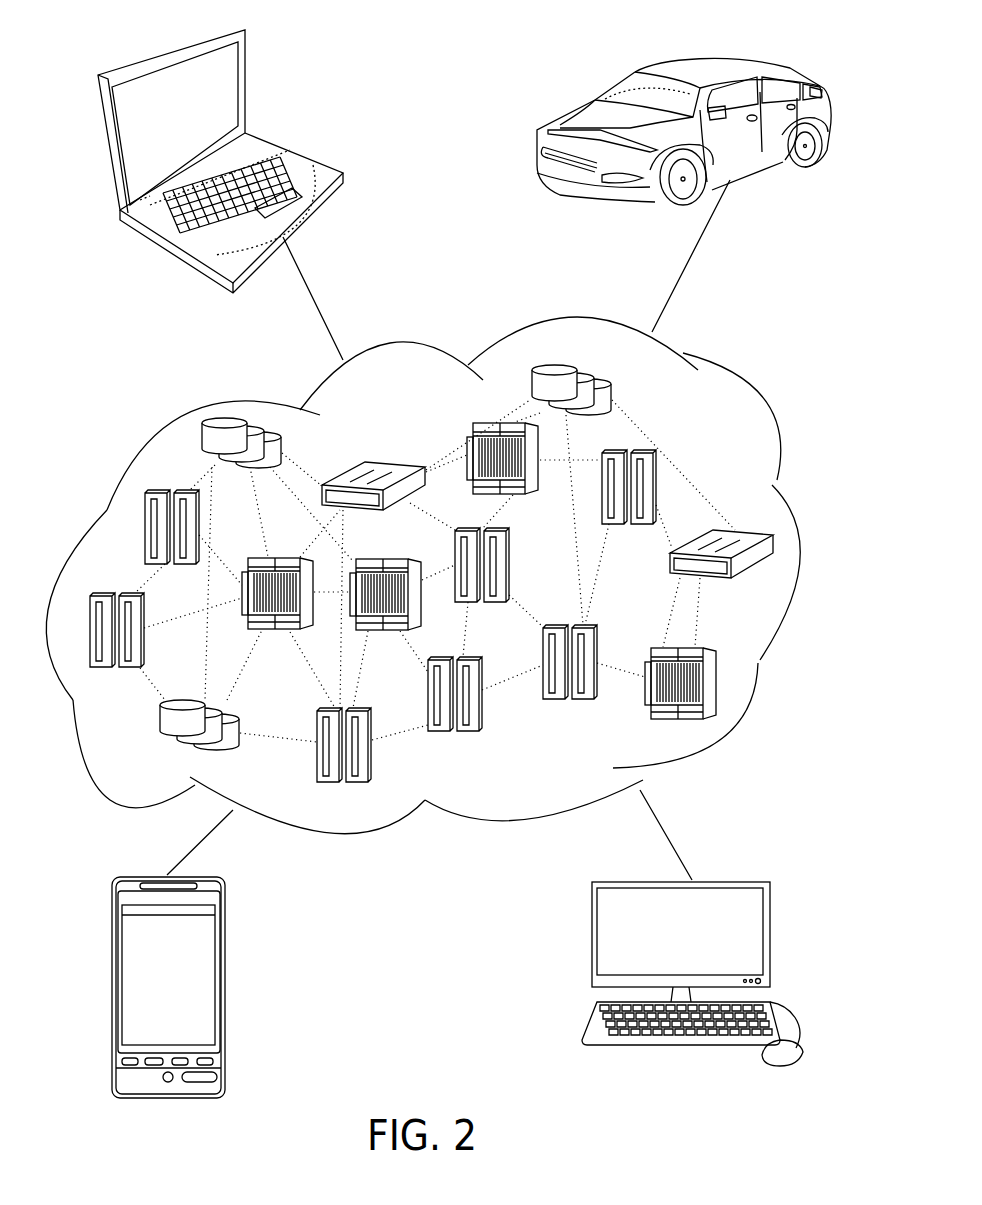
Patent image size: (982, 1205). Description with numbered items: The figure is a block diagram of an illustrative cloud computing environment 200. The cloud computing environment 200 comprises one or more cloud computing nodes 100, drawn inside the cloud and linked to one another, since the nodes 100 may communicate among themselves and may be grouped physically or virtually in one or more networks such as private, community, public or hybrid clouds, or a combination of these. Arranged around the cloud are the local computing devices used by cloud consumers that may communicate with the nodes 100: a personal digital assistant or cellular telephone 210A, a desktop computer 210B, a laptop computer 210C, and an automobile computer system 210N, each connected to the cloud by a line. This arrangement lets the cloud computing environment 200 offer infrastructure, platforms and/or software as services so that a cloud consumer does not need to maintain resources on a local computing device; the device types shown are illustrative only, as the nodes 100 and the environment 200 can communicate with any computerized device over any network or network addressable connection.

The cloud computing node 100 is at (744, 523).
The cloud computing environment 200 is at (753, 380).
The personal digital assistant (PDA) or cellular telephone 210A is at (260, 880).
The desktop computer 210B is at (770, 898).
The laptop computer 210C is at (300, 155).
The automobile computer system 210N is at (783, 70).